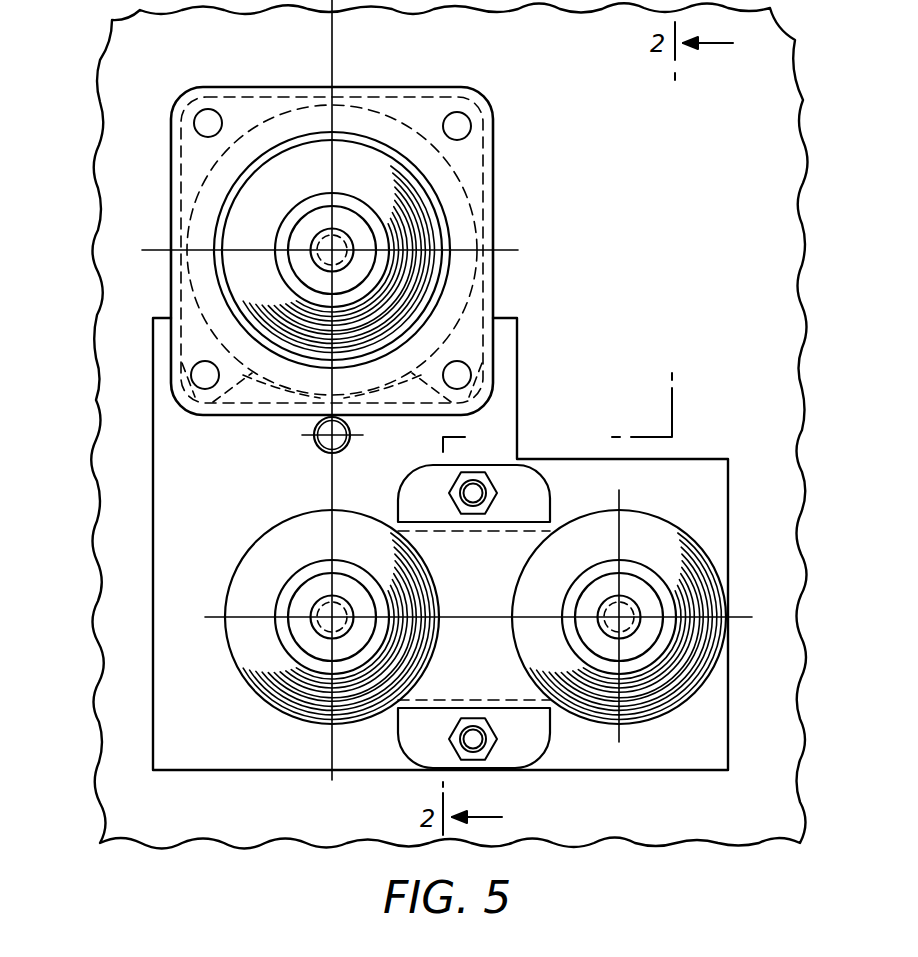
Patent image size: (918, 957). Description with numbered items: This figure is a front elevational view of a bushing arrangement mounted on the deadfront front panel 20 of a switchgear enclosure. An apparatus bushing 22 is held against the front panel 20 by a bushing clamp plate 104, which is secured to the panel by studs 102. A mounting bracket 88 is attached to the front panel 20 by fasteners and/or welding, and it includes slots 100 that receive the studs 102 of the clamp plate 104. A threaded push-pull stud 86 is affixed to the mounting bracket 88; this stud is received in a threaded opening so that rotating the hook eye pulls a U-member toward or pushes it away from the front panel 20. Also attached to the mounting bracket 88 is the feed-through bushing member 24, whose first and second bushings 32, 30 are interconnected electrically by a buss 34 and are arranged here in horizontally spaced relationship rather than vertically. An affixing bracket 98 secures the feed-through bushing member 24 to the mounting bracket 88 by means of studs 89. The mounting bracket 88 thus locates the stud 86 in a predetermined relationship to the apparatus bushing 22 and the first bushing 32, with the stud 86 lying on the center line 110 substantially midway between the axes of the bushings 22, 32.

The front panel 20 is at (774, 201).
The apparatus bushing 22 is at (243, 218).
The feed-through bushing member 24 is at (693, 535).
The second bushing 30 is at (718, 663).
The first bushing 32 is at (245, 667).
The buss 34 is at (433, 553).
The push-pull stud 86 is at (318, 448).
The mounting bracket 88 is at (694, 459).
The studs 89 is at (477, 497).
The affixing bracket 98 is at (553, 750).
The slots 100 is at (170, 365).
The studs 102 is at (210, 110).
The bushing clamp plate 104 is at (495, 178).
The center line 110 is at (333, 68).